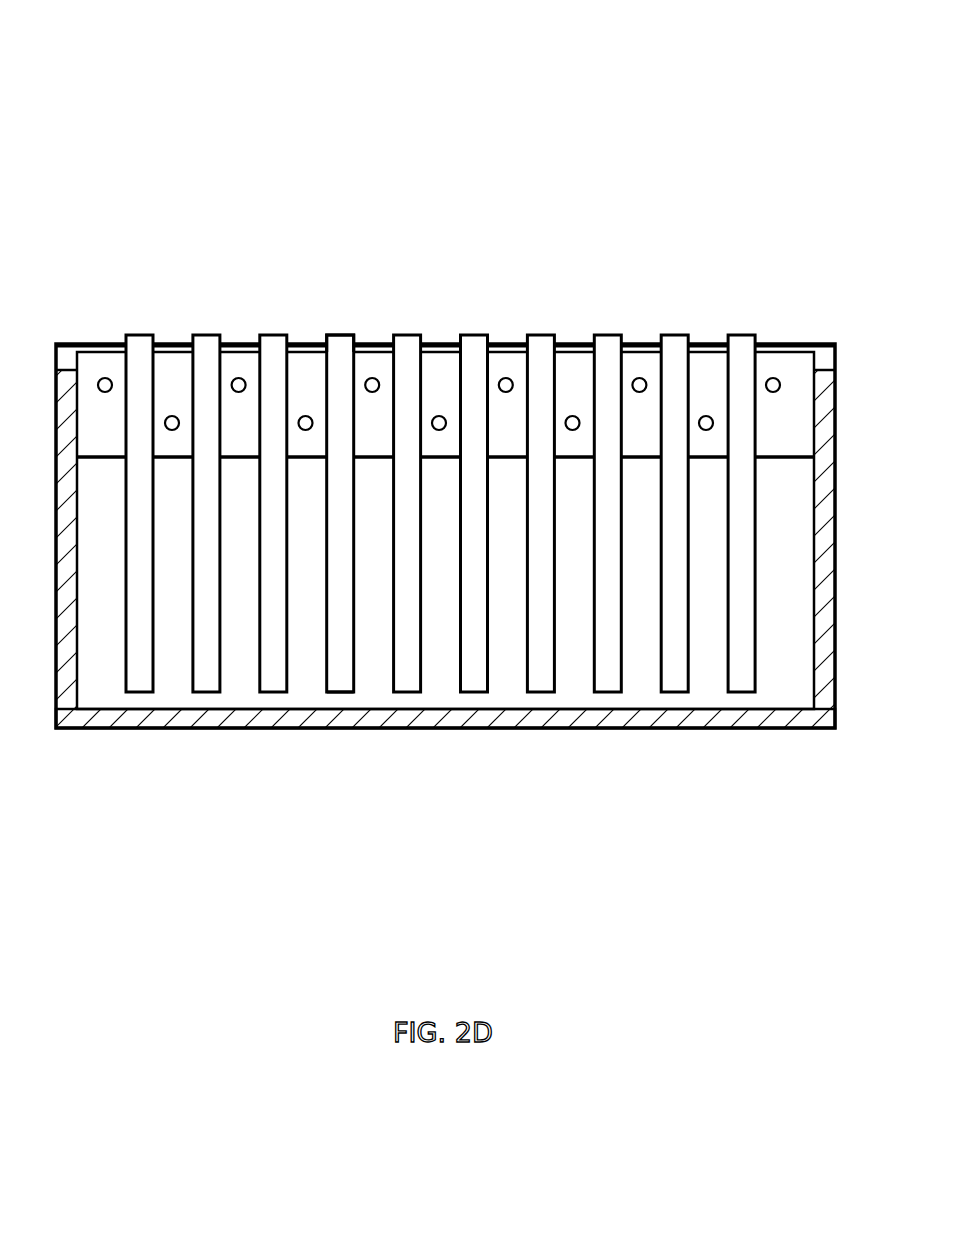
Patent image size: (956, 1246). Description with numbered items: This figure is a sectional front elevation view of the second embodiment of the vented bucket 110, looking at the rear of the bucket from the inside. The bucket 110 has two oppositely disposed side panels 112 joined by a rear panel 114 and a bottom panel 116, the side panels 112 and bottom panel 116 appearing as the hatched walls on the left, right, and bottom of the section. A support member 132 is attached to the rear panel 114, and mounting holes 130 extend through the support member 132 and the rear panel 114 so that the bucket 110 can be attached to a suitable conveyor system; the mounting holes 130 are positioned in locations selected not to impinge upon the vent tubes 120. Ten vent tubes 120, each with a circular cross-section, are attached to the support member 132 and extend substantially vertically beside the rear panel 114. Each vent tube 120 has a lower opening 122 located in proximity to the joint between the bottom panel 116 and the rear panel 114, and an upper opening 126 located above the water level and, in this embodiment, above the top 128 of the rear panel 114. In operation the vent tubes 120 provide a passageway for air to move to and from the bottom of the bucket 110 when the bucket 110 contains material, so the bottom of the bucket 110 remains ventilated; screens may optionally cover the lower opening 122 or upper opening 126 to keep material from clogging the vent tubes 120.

The vented bucket 110 is at (478, 444).
The side panel 112 is at (56, 415).
The rear panel 114 is at (95, 680).
The bottom panel 116 is at (460, 730).
The vent tube 120 is at (327, 650).
The lower opening 122 is at (335, 693).
The upper opening 126 is at (334, 335).
The top of the rear panel 128 is at (92, 342).
The mounting hole 130 is at (773, 377).
The support member 132 is at (640, 348).